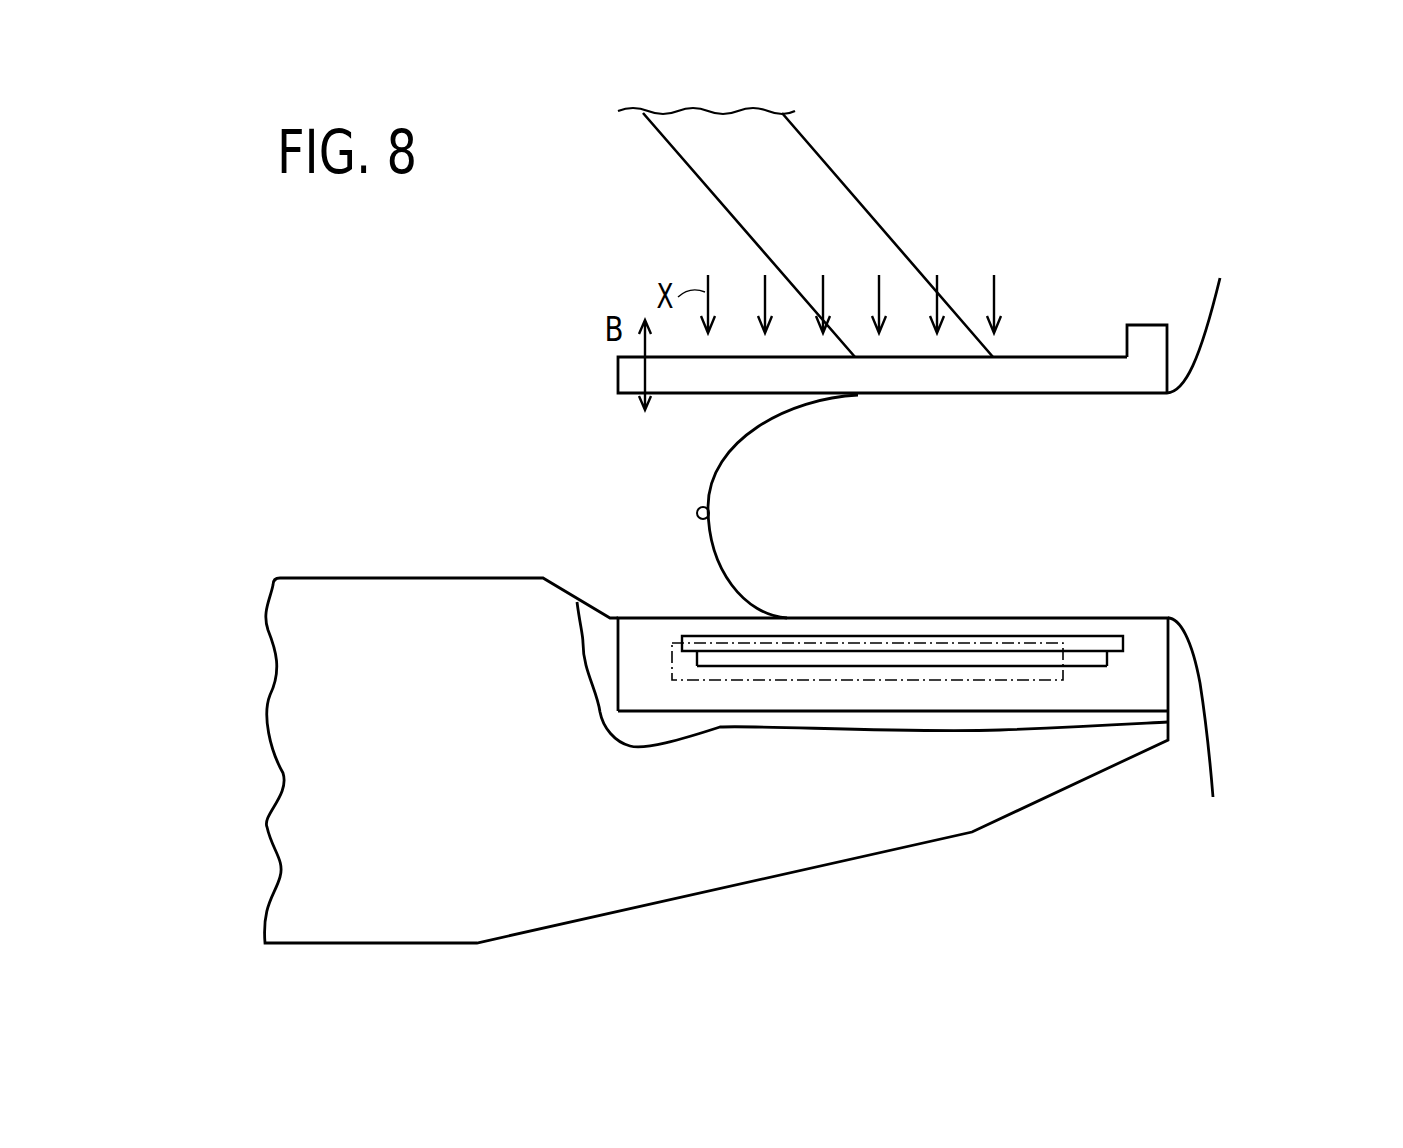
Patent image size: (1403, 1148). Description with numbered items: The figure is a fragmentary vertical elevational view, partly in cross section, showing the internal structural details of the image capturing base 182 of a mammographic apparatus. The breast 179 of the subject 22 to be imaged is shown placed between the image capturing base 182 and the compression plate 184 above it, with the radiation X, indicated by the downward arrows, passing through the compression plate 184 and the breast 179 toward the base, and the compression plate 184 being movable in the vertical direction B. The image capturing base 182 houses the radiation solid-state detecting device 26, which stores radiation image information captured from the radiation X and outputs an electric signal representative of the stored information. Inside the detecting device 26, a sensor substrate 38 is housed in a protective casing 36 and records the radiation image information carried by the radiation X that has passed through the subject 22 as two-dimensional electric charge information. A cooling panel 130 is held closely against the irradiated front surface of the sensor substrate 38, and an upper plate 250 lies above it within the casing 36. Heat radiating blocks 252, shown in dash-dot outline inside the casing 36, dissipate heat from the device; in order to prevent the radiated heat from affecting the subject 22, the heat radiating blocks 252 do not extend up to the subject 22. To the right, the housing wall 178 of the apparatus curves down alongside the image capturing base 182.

The subject 22 is at (737, 478).
The radiation solid-state detecting device 26 is at (700, 602).
The protective casing 36 is at (947, 692).
The sensor substrate 38 is at (748, 658).
The cooling panel 130 is at (830, 680).
The mammographic apparatus housing wall 178 is at (1223, 740).
The breast 179 is at (662, 514).
The image capturing base 182 is at (820, 855).
The compression plate 184 is at (1145, 338).
The upper plate 250 is at (1078, 645).
The heat radiating blocks 252 is at (672, 656).